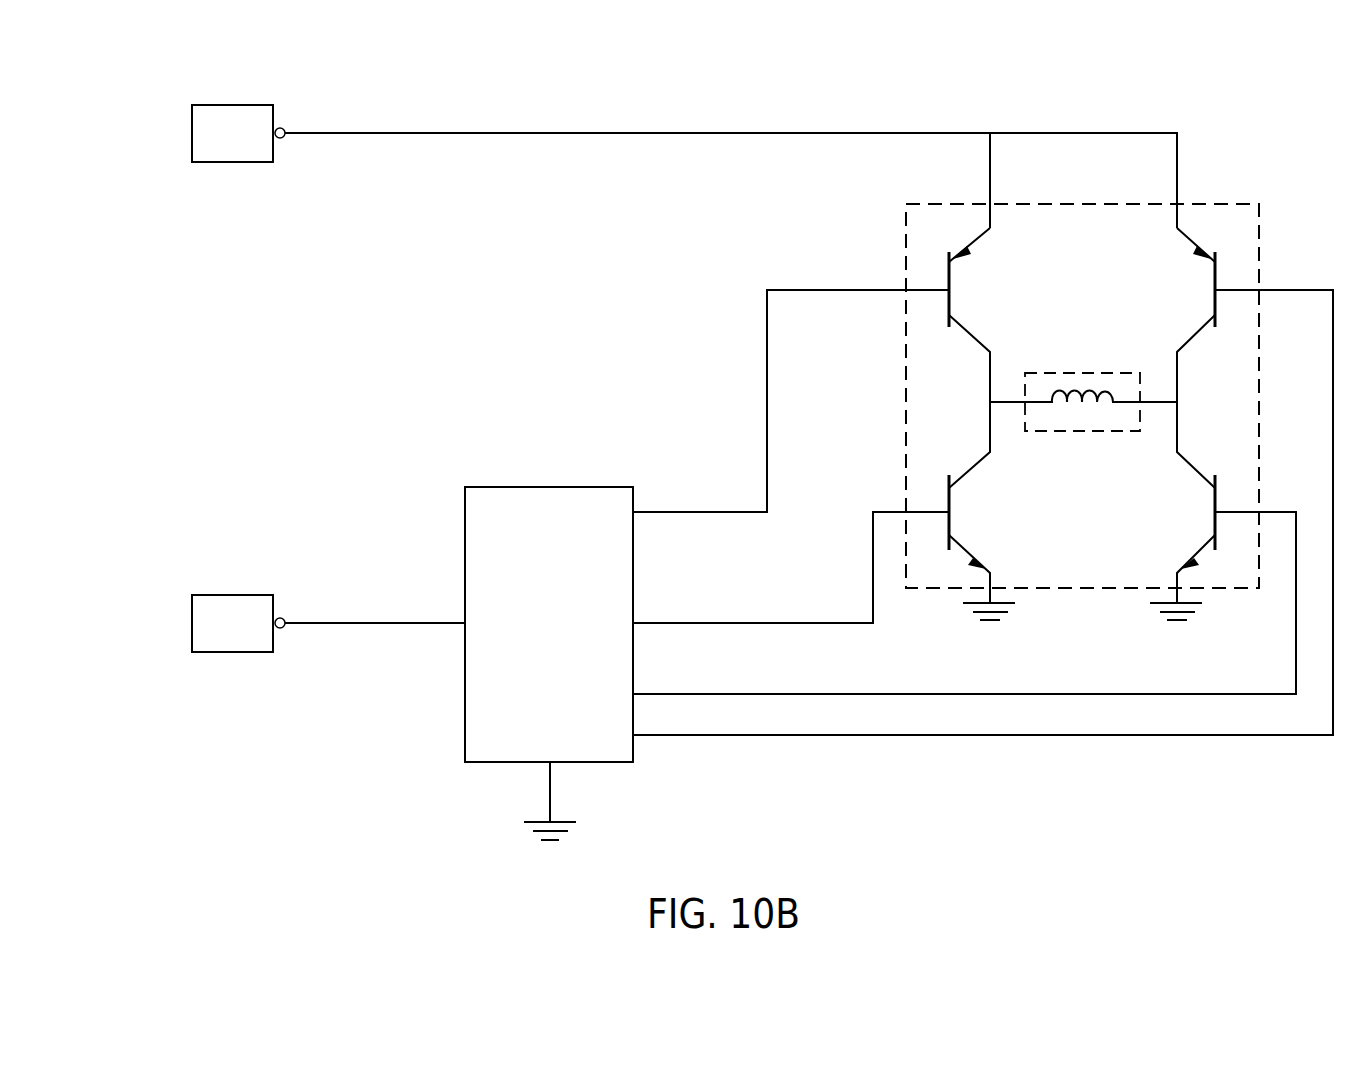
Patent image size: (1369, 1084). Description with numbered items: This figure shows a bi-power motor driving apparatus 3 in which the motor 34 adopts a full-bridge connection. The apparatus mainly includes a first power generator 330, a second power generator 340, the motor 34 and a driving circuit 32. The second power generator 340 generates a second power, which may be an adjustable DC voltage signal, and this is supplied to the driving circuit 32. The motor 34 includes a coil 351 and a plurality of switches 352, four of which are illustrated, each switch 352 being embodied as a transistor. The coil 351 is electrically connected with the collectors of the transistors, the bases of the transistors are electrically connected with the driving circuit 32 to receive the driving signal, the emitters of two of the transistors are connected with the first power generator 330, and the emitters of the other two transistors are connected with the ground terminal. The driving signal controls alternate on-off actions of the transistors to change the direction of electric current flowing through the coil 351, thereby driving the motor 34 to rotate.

The bi-power motor driving apparatus 3 is at (963, 85).
The first power generator 330 is at (192, 133).
The second power generator 340 is at (192, 623).
The driving circuit 32 is at (590, 487).
The motor 34 is at (1205, 204).
The coil 351 is at (1085, 373).
The switch 352 is at (1220, 270).